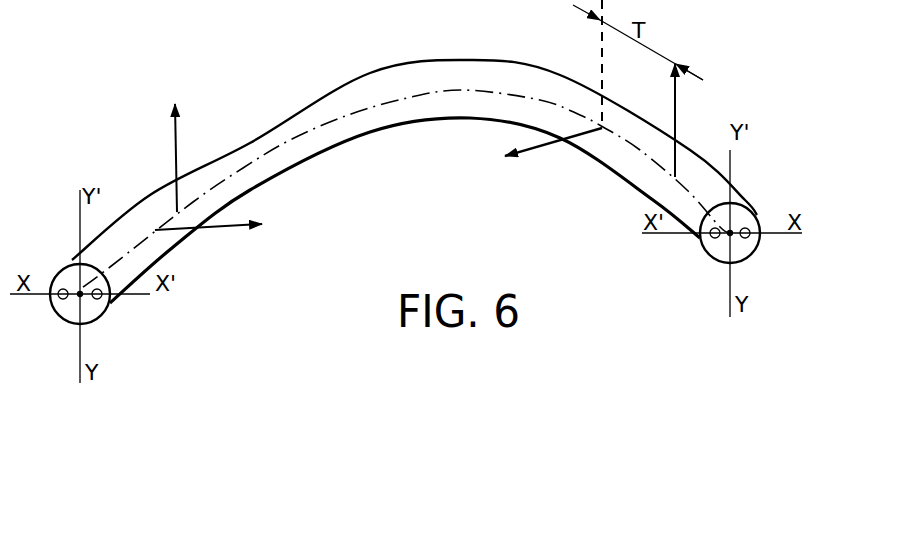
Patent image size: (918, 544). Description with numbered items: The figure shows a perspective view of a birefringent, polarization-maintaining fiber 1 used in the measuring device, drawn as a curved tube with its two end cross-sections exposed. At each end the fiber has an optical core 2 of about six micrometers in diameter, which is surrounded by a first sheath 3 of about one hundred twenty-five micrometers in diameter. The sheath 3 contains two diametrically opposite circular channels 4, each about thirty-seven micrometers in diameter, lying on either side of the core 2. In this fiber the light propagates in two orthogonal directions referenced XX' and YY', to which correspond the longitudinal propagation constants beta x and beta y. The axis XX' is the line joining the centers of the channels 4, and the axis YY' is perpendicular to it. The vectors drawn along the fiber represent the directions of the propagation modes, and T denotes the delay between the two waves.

The curved tubular body 1 is at (453, 58).
The optical core 2 is at (737, 240).
The first sheath 3 is at (745, 222).
The circular channels 4 is at (712, 240).